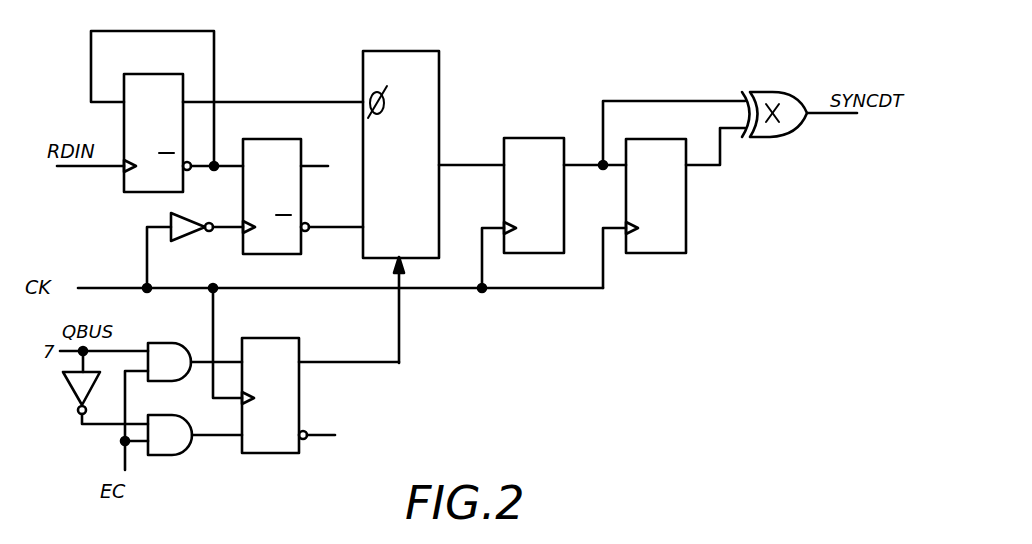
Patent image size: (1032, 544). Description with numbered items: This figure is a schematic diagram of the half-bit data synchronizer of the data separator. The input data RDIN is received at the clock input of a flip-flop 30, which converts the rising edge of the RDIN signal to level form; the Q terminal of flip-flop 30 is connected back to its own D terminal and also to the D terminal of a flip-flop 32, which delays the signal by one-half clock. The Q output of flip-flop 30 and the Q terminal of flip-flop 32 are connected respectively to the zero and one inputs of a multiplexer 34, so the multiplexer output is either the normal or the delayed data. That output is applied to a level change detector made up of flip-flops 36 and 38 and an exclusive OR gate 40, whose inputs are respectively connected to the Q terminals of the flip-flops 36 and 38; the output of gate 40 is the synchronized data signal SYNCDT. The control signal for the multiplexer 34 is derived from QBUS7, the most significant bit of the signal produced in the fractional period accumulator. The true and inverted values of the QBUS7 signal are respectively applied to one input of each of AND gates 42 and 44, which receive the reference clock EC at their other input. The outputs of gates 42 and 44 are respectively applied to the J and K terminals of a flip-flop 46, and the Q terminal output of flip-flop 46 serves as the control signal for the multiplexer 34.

The flip-flop 30 is at (130, 186).
The flip-flop 32 is at (272, 254).
The multiplexer 34 is at (428, 83).
The flip-flop 36 is at (520, 146).
The flip-flop 38 is at (686, 224).
The exclusive OR gate 40 is at (784, 137).
The AND gate 42 is at (163, 346).
The AND gate 44 is at (168, 455).
The flip-flop 46 is at (290, 408).